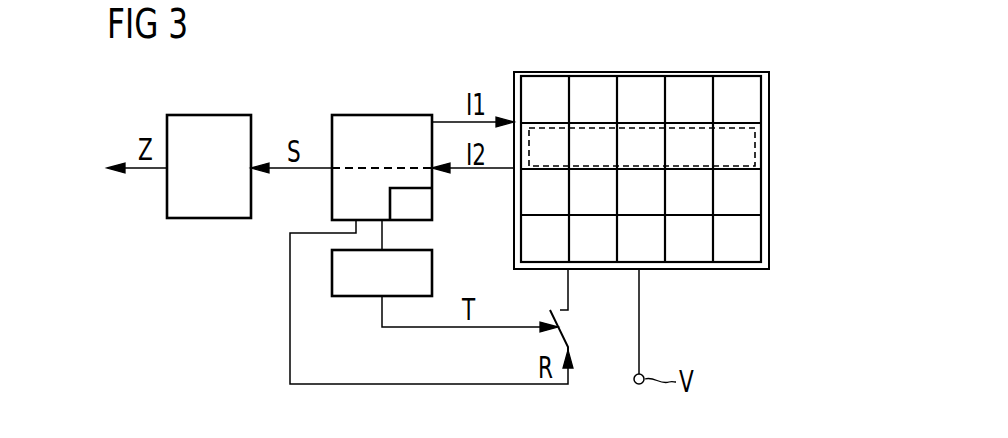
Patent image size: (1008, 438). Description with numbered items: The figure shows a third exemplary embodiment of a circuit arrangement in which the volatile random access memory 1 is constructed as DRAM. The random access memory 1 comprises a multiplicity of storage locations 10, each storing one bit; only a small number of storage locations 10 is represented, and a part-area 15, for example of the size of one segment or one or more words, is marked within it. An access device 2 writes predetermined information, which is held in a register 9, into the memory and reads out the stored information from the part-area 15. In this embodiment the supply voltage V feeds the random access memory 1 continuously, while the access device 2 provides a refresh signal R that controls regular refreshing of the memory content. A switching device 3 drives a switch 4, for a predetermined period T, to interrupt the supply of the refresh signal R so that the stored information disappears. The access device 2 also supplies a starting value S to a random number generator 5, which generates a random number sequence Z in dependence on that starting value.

The volatile random access memory 1 is at (769, 240).
The access device 2 is at (383, 115).
The switching device 3 is at (432, 270).
The switch 4 is at (563, 330).
The random number generator 5 is at (209, 115).
The register 9 is at (423, 207).
The storage location 10 is at (756, 102).
The part-area 15 is at (755, 145).